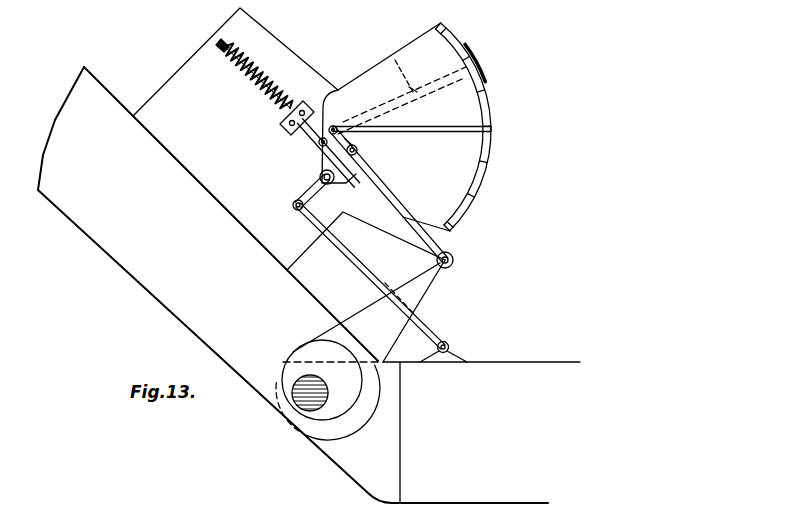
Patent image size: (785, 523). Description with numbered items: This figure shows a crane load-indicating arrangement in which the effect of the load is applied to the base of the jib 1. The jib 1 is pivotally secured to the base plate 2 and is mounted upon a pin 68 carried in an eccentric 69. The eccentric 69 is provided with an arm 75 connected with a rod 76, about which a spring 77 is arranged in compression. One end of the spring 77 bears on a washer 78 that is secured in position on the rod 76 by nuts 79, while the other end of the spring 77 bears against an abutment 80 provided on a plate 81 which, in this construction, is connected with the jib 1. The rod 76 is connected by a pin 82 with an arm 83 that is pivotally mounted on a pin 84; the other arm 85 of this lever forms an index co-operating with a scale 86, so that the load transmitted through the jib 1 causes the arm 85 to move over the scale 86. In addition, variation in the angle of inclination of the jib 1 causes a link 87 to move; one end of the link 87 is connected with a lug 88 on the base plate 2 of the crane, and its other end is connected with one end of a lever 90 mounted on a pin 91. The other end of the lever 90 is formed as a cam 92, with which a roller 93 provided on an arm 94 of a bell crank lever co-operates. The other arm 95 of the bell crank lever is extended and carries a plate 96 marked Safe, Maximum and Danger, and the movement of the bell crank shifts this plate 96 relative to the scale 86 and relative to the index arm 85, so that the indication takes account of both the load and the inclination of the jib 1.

The jib 1 is at (115, 251).
The base plate 2 is at (498, 383).
The pin 68 is at (305, 392).
The eccentric 69 is at (322, 355).
The arm 75 is at (417, 288).
The rod 76 is at (403, 217).
The spring 77 is at (262, 92).
The washer 78 is at (228, 53).
The nuts 79 is at (217, 45).
The abutment 80 is at (285, 122).
The plate 81 is at (470, 200).
The pin 82 is at (318, 142).
The arm 83 is at (333, 88).
The pin 84 is at (338, 123).
The arm 85 is at (443, 127).
The scale 86 is at (482, 107).
The link 87 is at (352, 263).
The lug 88 is at (453, 355).
The lever 90 is at (340, 212).
The pin 91 is at (318, 178).
The cam 92 is at (318, 164).
The roller 93 is at (356, 153).
The arm 94 is at (358, 147).
The arm 95 is at (395, 60).
The plate 96 is at (472, 58).